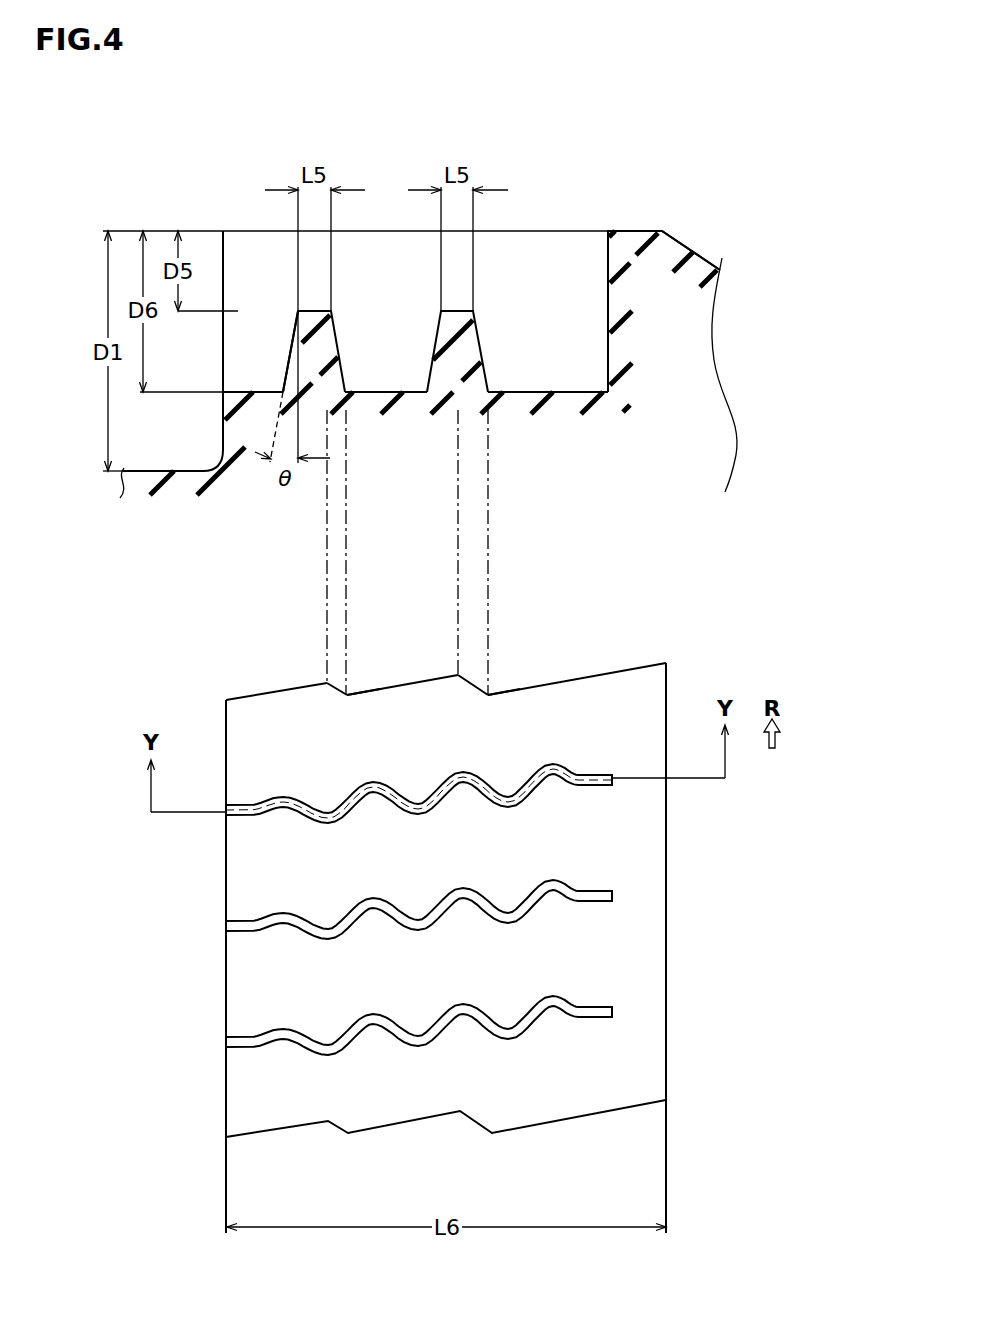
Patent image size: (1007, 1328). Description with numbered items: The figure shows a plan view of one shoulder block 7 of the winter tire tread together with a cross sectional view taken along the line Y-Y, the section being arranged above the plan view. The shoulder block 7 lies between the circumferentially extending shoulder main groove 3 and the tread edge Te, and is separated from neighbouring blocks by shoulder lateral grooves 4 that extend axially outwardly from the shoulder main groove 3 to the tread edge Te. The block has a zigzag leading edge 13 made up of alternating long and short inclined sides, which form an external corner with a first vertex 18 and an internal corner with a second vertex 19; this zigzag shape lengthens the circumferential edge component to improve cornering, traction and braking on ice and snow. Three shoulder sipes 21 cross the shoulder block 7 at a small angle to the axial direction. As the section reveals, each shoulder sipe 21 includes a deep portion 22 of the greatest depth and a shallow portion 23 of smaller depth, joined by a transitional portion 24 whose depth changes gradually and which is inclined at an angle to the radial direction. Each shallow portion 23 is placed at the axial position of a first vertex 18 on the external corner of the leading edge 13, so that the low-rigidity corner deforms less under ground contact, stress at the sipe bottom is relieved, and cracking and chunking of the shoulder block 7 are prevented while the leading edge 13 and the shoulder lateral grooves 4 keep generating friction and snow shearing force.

The shoulder main groove 3 is at (170, 453).
The shoulder lateral groove 4 is at (625, 640).
The shoulder block 7 is at (605, 958).
The zigzag leading edge 13 is at (580, 667).
The first vertex 18 is at (327, 683).
The second vertex 19 is at (347, 695).
The shoulder sipe 21 is at (334, 784).
The deep portion 22 is at (238, 390).
The shallow portion 23 is at (323, 310).
The transitional portion 24 is at (292, 355).
The tread edge Te is at (663, 229).